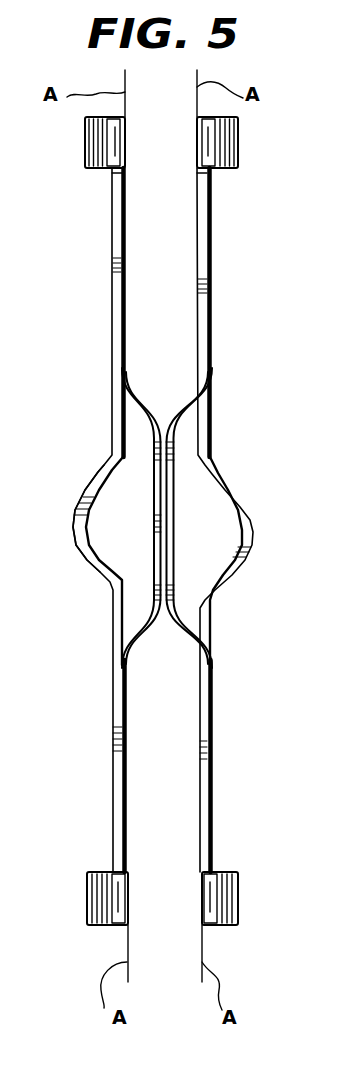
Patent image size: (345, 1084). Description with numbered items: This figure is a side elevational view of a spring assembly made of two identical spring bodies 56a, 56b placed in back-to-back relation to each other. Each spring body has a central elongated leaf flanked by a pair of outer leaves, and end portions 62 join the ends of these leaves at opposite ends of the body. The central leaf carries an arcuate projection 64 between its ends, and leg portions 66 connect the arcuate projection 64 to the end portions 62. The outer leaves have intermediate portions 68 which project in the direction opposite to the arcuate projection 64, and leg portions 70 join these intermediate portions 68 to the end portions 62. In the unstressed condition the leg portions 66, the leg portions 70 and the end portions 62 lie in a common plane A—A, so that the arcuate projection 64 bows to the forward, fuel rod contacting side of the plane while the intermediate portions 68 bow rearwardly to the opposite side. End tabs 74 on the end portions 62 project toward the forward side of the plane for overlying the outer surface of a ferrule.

The spring body 56a is at (113, 678).
The spring body 56b is at (212, 662).
The end portions 62 is at (125, 137).
The arcuate projection 64 is at (75, 520).
The leg portions 66 is at (120, 432).
The intermediate portions 68 is at (153, 517).
The leg portions 70 is at (120, 335).
The end tabs 74 is at (98, 870).